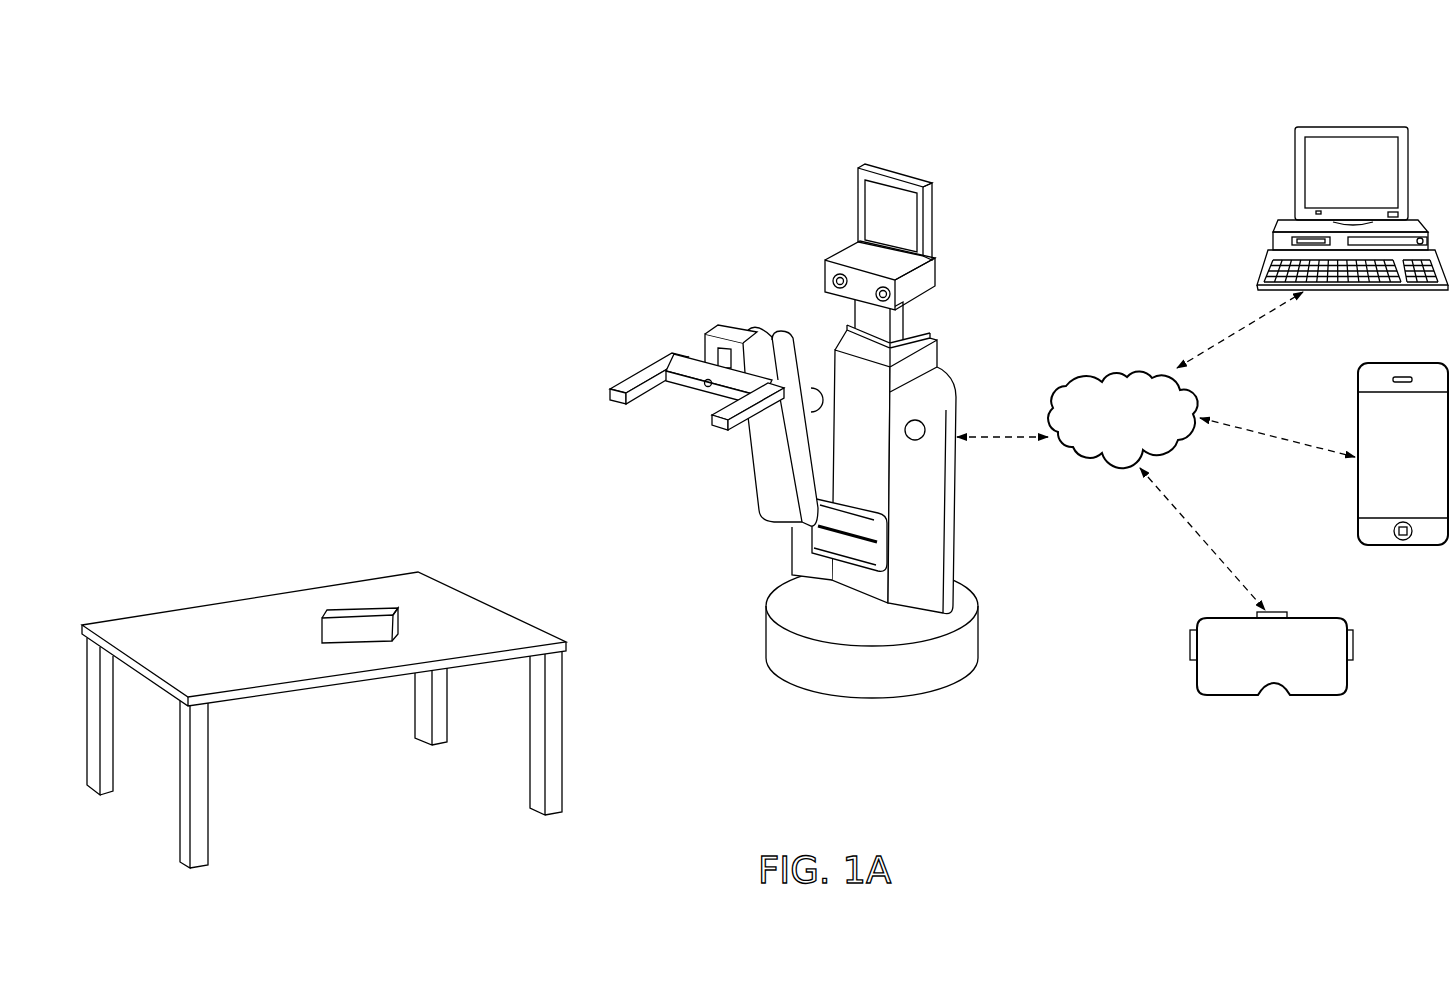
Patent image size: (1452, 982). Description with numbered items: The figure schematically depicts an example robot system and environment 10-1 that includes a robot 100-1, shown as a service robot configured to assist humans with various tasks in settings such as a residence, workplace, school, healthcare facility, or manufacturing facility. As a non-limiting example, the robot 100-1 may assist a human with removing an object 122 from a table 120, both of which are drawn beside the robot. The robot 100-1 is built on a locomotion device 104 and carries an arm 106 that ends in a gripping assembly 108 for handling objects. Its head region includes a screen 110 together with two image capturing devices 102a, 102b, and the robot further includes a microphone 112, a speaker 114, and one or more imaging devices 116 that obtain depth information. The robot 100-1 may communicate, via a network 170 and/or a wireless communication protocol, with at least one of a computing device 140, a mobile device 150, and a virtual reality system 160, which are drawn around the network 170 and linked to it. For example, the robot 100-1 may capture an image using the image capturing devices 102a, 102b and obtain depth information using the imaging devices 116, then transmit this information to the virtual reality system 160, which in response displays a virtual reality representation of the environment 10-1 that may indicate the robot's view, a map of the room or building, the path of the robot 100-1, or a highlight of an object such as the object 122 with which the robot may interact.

The robot system and environment 10-1 is at (765, 456).
The robot 100-1 is at (802, 382).
The image capturing device 102a is at (893, 296).
The image capturing device 102b is at (828, 277).
The locomotion device 104 is at (767, 630).
The arm 106 is at (757, 328).
The gripping assembly 108 is at (624, 386).
The screen 110 is at (858, 197).
The microphone 112 is at (817, 392).
The speaker 114 is at (926, 432).
The imaging device 116 is at (704, 386).
The table 120 is at (357, 577).
The object 122 is at (320, 631).
The computing device 140 is at (1295, 171).
The mobile device 150 is at (1403, 363).
The virtual reality system 160 is at (1353, 648).
The network 170 is at (1112, 372).